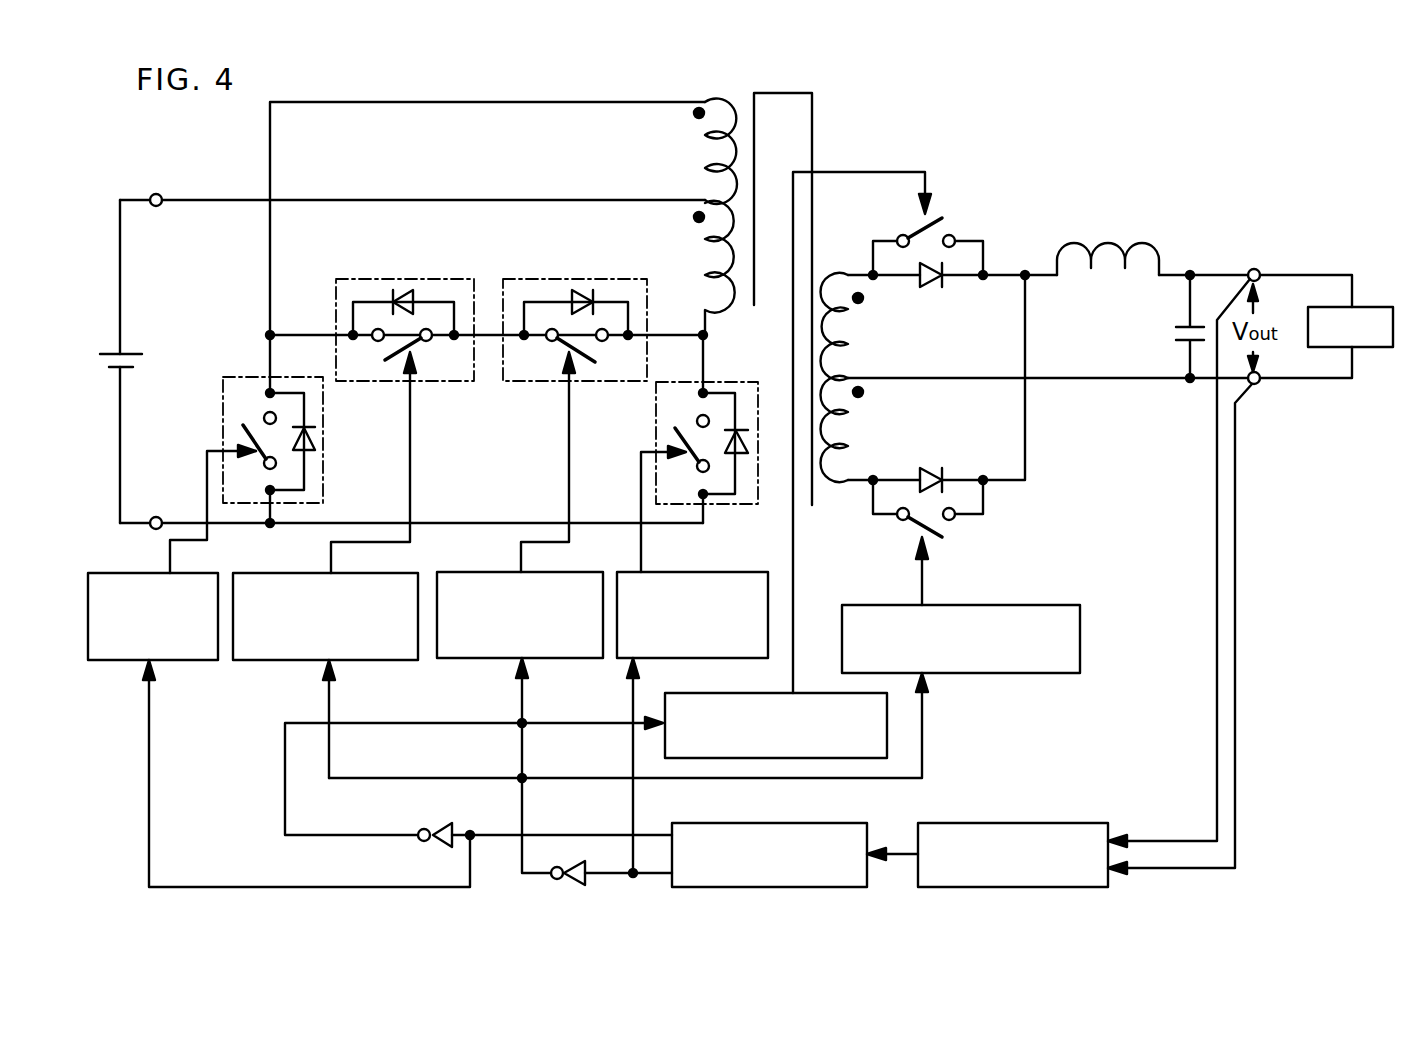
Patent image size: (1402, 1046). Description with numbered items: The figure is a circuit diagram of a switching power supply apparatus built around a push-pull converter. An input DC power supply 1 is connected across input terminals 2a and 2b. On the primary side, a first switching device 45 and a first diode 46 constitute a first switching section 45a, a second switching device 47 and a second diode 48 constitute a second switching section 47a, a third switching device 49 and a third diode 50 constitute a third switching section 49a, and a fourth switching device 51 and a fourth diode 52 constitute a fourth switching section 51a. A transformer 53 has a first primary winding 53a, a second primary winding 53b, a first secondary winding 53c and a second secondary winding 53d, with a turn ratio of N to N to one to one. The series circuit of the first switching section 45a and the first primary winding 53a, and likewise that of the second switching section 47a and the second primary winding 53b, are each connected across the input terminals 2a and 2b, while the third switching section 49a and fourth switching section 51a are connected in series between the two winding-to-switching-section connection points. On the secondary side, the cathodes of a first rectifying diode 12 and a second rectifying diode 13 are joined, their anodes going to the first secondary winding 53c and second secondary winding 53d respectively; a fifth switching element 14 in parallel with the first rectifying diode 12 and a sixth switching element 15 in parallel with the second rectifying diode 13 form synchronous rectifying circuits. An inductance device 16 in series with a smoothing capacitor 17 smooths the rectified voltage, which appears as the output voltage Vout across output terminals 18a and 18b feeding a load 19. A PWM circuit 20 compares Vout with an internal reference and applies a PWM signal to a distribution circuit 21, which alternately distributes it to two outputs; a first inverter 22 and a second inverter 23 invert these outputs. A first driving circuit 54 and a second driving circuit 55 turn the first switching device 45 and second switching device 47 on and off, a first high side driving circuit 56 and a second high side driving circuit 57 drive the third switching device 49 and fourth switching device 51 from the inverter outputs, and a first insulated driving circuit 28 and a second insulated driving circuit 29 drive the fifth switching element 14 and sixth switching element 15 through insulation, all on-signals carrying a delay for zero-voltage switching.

The input DC power supply 1 is at (130, 354).
The input terminal 2a is at (160, 194).
The input terminal 2b is at (156, 517).
The first rectifying diode 12 is at (935, 287).
The second rectifying diode 13 is at (930, 468).
The fifth switching element 14 is at (935, 225).
The sixth switching element 15 is at (945, 538).
The inductance device 16 is at (1110, 248).
The smoothing capacitor 17 is at (1177, 327).
The output terminal 18a is at (1260, 270).
The output terminal 18b is at (1258, 386).
The load 19 is at (1362, 347).
The PWM circuit 20 is at (1020, 823).
The distribution circuit 21 is at (812, 823).
The first inverter 22 is at (562, 880).
The second inverter 23 is at (440, 848).
The first insulated driving circuit 28 is at (818, 693).
The second insulated driving circuit 29 is at (1020, 605).
The first switching device 45 is at (688, 425).
The first switching section 45a is at (716, 383).
The first diode 46 is at (745, 455).
The second switching device 47 is at (252, 432).
The second switching section 47a is at (237, 377).
The second diode 48 is at (316, 437).
The third switching device 49 is at (386, 358).
The third switching section 49a is at (358, 278).
The third diode 50 is at (405, 290).
The fourth switching device 51 is at (590, 360).
The fourth switching section 51a is at (560, 278).
The fourth diode 52 is at (583, 290).
The transformer 53 is at (813, 138).
The first primary winding 53a is at (707, 253).
The second primary winding 53b is at (707, 168).
The first secondary winding 53c is at (848, 312).
The second secondary winding 53d is at (848, 415).
The first driving circuit 54 is at (685, 572).
The second driving circuit 55 is at (140, 573).
The first high side driving circuit 56 is at (300, 573).
The second high side driving circuit 57 is at (460, 572).